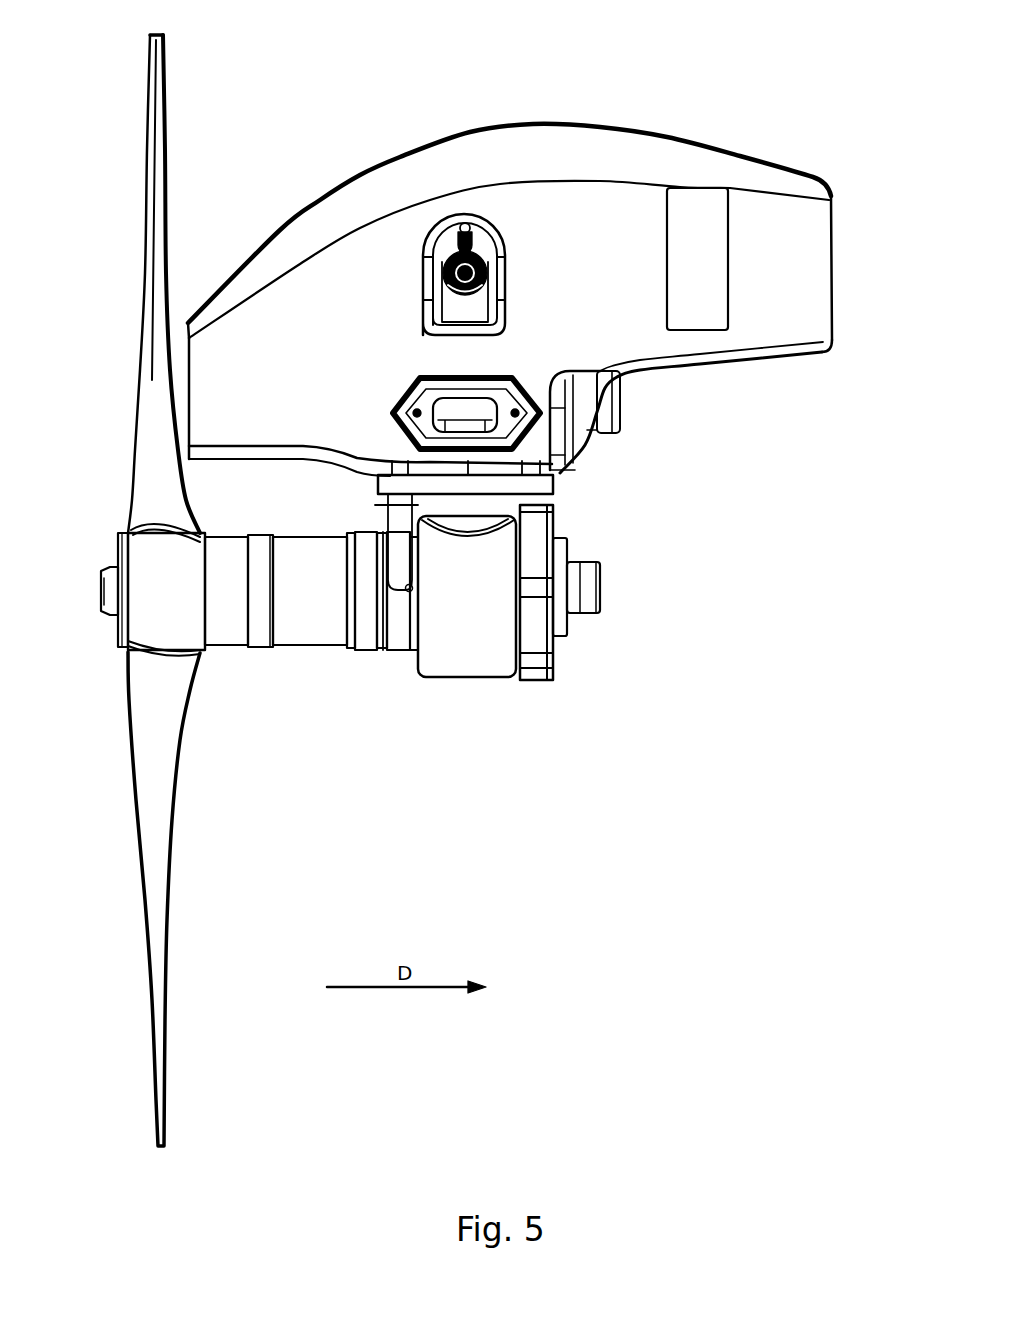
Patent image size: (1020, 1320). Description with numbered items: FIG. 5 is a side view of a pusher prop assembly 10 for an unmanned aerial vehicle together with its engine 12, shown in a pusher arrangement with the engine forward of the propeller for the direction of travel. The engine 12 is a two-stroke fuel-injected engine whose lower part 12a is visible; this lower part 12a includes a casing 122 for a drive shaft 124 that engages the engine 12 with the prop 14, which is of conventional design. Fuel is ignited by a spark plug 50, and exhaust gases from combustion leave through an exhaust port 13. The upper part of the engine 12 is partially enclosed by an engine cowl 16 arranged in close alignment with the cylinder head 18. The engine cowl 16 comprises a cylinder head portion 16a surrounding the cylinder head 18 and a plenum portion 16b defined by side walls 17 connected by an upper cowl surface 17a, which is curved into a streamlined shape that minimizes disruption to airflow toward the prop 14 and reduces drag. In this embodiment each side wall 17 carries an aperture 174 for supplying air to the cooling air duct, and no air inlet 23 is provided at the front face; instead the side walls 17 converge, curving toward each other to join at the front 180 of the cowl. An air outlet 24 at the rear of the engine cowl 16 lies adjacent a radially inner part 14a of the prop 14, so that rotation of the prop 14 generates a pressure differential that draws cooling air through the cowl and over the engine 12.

The pusher prop assembly 10 is at (218, 644).
The engine 12 is at (420, 505).
The lower part of engine 12a is at (460, 640).
The exhaust port 13 is at (475, 407).
The prop 14 is at (150, 229).
The radially inner part of the prop 14a is at (131, 457).
The engine cowl 16 is at (567, 240).
The cylinder head portion 16a is at (358, 290).
The plenum portion 16b is at (775, 310).
The side walls 17 is at (785, 218).
The upper cowl surface 17a is at (630, 128).
The cylinder head 18 is at (386, 485).
The air inlet 23 is at (832, 230).
The air outlet 24 is at (190, 350).
The spark plug 50 is at (463, 223).
The casing 122 is at (300, 617).
The drive shaft 124 is at (100, 590).
The aperture 174 is at (690, 308).
The front of engine cowl 180 is at (832, 302).